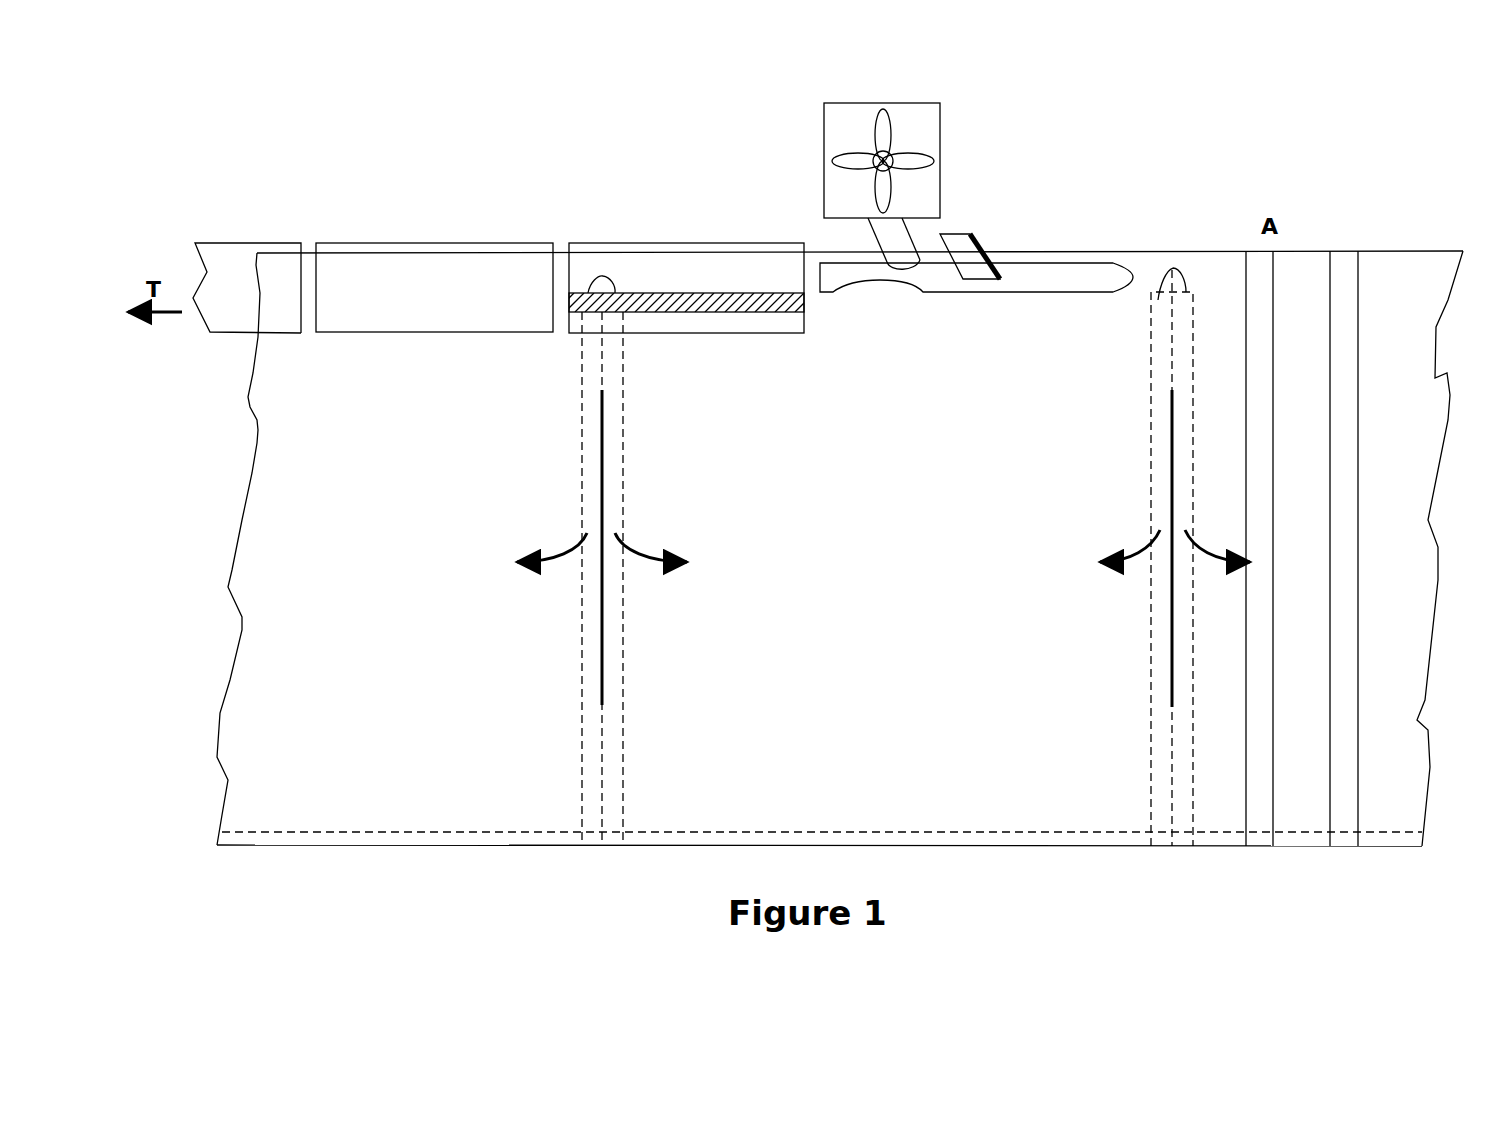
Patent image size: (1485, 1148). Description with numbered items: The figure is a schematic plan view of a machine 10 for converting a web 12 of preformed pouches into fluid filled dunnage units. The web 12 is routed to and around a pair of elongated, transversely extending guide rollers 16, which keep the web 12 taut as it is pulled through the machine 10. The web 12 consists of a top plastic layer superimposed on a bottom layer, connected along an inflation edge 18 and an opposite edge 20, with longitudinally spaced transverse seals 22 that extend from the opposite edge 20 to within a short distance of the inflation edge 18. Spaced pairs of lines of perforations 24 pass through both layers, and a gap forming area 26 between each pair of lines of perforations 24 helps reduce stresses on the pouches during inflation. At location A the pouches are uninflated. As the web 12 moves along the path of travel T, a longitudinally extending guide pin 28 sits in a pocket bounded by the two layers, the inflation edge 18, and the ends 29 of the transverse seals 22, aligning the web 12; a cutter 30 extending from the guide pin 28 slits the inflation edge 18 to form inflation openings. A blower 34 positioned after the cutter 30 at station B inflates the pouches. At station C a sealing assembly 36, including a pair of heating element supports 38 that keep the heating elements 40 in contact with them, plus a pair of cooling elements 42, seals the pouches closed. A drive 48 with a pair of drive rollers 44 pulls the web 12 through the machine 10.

The machine 10 is at (720, 120).
The web 12 is at (975, 810).
The guide rollers 16 is at (1263, 813).
The inflation edge 18 is at (1152, 252).
The opposite edge 20 is at (338, 848).
The transverse seals 22 is at (593, 773).
The lines of perforations 24 is at (605, 360).
The gap forming area 26 is at (604, 647).
The guide pin 28 is at (1020, 280).
The ends of the transverse seals 29 is at (588, 296).
The cutter 30 is at (960, 243).
The blower 34 is at (922, 133).
The sealing assembly 36 is at (455, 183).
The heating element support 38 is at (587, 275).
The heating element 40 is at (728, 302).
The cooling element 42 is at (423, 270).
The drive rollers 44 is at (272, 268).
The drive 48 is at (310, 358).